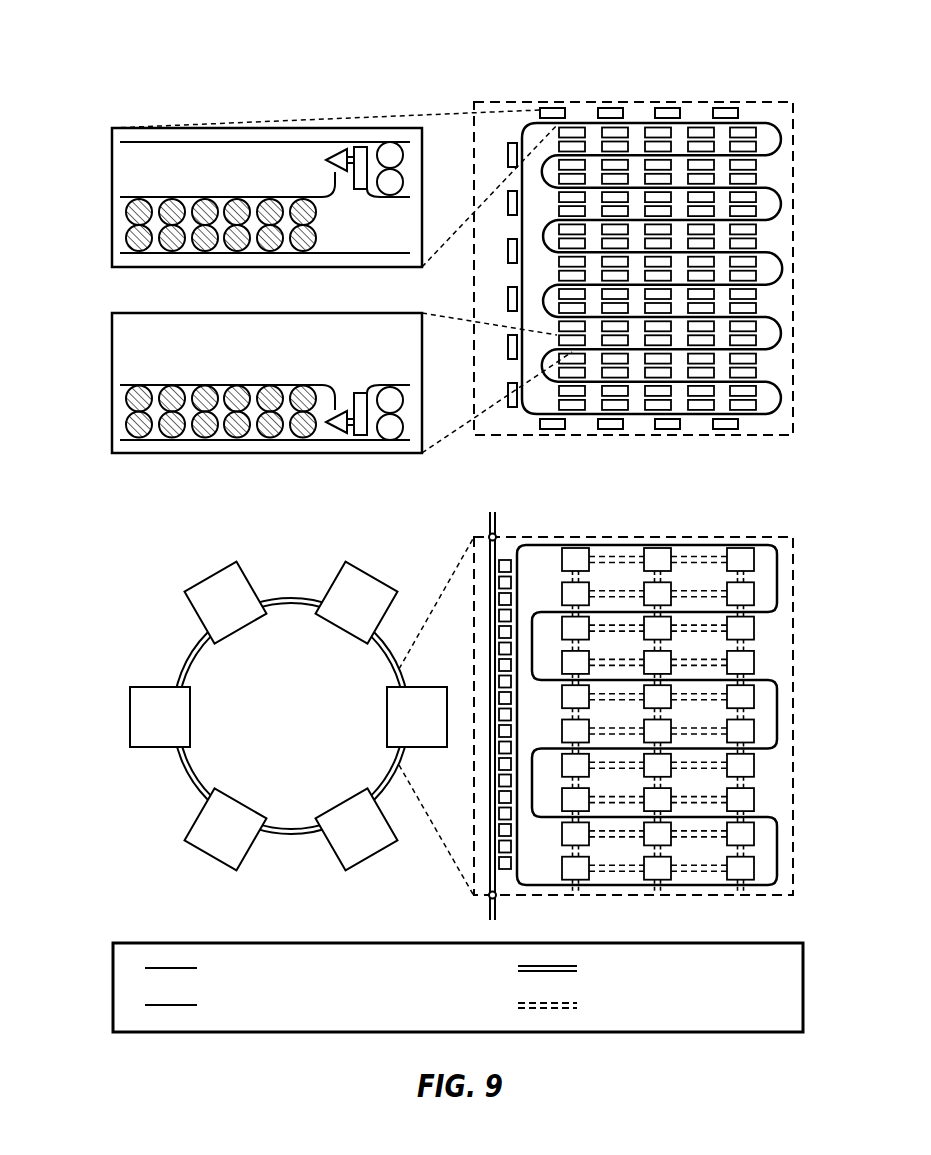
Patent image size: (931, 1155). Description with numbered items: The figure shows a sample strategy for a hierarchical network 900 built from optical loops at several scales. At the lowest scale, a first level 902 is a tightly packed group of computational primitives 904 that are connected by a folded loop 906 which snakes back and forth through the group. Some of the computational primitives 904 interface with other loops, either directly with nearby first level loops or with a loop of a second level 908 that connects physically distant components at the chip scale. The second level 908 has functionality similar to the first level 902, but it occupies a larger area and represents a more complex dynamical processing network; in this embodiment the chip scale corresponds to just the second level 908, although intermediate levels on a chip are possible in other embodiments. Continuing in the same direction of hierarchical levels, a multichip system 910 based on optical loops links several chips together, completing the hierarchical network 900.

The hierarchical network 900 is at (297, 58).
The first level 902 is at (767, 235).
The computational primitives 904 is at (112, 167).
The folded loop 906 is at (778, 333).
The second level 908 is at (793, 632).
The multichip system 910 is at (173, 790).